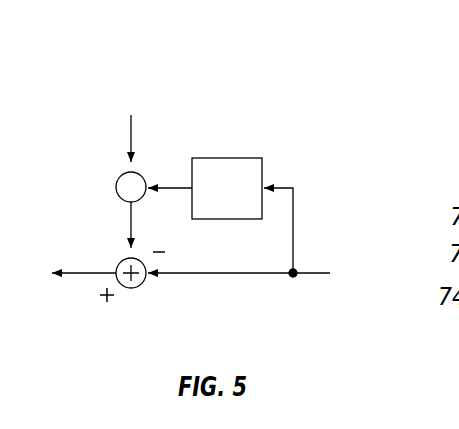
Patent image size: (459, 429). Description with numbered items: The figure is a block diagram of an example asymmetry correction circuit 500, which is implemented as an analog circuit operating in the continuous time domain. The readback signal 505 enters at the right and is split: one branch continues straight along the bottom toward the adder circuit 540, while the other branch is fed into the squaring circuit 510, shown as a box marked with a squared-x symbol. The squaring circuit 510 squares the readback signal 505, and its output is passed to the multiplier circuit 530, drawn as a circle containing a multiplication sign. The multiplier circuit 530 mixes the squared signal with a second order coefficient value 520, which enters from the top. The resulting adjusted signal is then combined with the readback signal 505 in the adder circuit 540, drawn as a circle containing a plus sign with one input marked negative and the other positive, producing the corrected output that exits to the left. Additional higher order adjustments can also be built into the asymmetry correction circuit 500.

The asymmetry correction circuit 500 is at (344, 92).
The readback signal 505 is at (313, 273).
The squaring circuit 510 is at (245, 158).
The second order coefficient value 520 is at (130, 138).
The multiplier circuit 530 is at (116, 188).
The adder circuit 540 is at (131, 288).